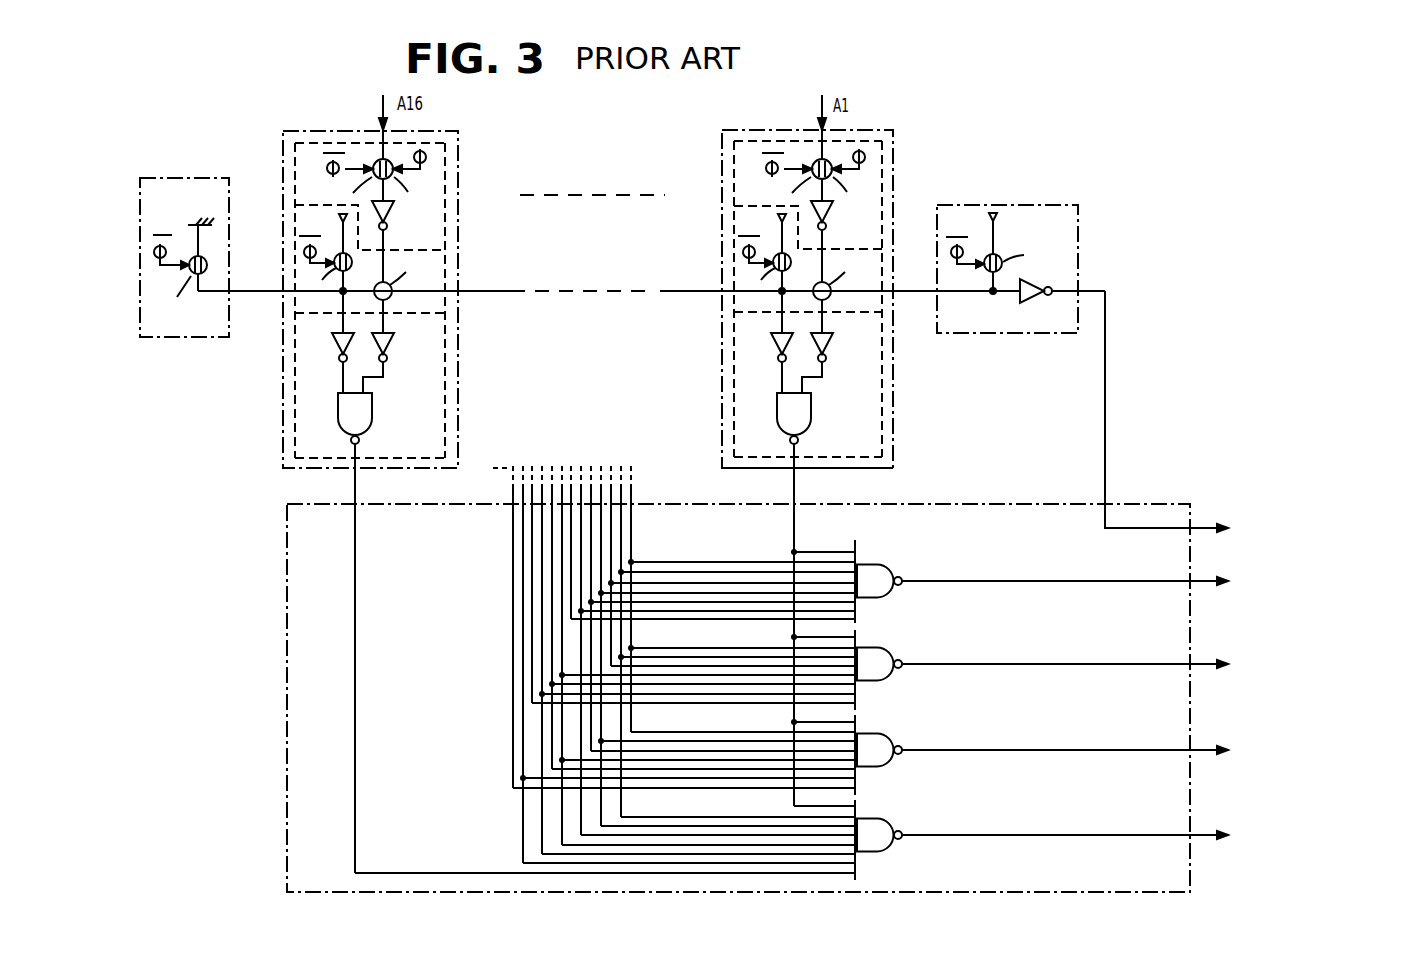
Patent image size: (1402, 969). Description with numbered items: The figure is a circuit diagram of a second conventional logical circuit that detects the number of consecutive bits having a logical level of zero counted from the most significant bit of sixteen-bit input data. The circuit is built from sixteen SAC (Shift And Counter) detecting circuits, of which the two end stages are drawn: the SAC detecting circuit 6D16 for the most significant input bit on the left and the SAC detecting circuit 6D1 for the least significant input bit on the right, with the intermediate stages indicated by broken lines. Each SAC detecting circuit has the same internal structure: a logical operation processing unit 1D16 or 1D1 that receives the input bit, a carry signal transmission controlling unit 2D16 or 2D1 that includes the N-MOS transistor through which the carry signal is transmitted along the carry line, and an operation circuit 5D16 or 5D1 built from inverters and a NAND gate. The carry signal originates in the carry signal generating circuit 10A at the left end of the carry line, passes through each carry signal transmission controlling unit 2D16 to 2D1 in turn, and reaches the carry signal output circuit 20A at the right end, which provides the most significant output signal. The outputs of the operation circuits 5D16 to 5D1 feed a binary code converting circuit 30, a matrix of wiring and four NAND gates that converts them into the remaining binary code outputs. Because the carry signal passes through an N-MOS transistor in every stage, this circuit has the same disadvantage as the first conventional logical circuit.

The carry signal generating circuit 10A is at (149, 338).
The logical operation processing unit 1D16 is at (443, 178).
The carry signal transmission controlling unit 2D16 is at (440, 306).
The operation circuit 5D16 is at (440, 383).
The SAC detecting circuit 6D16 is at (283, 462).
The logical operation processing unit 1D1 is at (893, 131).
The carry signal transmission controlling unit 2D1 is at (882, 250).
The operation circuit 5D1 is at (870, 361).
The SAC detecting circuit 6D1 is at (893, 420).
The carry signal output circuit 20A is at (1078, 232).
The binary code converting circuit 30 is at (1148, 503).